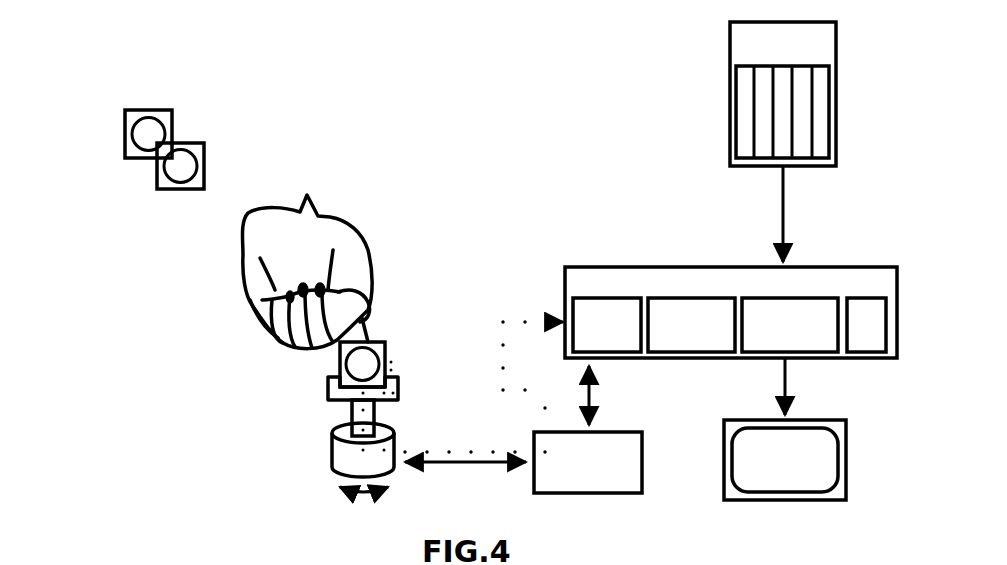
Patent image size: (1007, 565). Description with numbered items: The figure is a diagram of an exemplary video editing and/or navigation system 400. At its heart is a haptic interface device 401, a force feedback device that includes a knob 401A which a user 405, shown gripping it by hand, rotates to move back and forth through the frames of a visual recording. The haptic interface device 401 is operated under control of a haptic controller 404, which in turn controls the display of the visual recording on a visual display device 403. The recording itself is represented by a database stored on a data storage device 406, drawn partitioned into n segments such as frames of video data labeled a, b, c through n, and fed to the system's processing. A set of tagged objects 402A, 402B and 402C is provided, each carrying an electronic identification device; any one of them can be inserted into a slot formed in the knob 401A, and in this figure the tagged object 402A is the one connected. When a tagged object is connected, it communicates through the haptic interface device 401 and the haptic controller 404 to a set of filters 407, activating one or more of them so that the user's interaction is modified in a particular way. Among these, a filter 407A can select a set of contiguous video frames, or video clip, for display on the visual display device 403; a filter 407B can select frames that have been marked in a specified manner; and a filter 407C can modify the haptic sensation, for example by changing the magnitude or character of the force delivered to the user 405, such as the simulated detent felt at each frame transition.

The video editing and/or navigation system 400 is at (258, 57).
The haptic interface device 401 is at (330, 462).
The knob 401A is at (328, 386).
The tagged object 402A is at (340, 360).
The tagged object 402B is at (157, 185).
The tagged object 402C is at (125, 132).
The visual display device 403 is at (795, 500).
The haptic controller 404 is at (586, 494).
The user 405 is at (345, 228).
The data storage device 406 is at (836, 95).
The set of filters 407 is at (652, 267).
The filter 407A is at (607, 325).
The filter 407B is at (691, 325).
The filter 407C is at (790, 325).